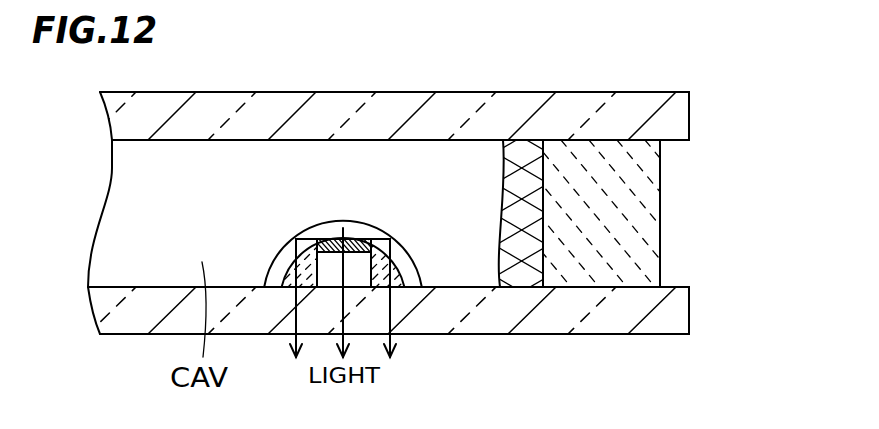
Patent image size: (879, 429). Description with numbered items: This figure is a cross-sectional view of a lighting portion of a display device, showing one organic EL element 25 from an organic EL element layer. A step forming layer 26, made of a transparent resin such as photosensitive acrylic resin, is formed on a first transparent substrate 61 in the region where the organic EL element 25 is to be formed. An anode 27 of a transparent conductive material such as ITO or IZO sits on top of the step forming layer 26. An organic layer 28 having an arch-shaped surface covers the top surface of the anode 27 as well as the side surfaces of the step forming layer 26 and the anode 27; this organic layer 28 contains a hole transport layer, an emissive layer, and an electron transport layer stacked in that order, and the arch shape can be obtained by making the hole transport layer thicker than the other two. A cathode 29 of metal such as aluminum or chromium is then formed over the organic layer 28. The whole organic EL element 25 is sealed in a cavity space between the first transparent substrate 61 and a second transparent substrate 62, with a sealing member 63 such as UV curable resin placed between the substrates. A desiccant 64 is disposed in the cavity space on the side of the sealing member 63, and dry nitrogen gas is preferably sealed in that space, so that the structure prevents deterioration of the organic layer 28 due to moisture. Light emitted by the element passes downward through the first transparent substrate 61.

The organic EL element 25 is at (339, 219).
The step forming layer 26 is at (376, 266).
The anode 27 is at (364, 234).
The organic layer 28 is at (354, 214).
The cathode 29 is at (341, 198).
The first transparent substrate 61 is at (677, 315).
The second transparent substrate 62 is at (676, 113).
The sealing member 63 is at (647, 215).
The desiccant 64 is at (526, 272).